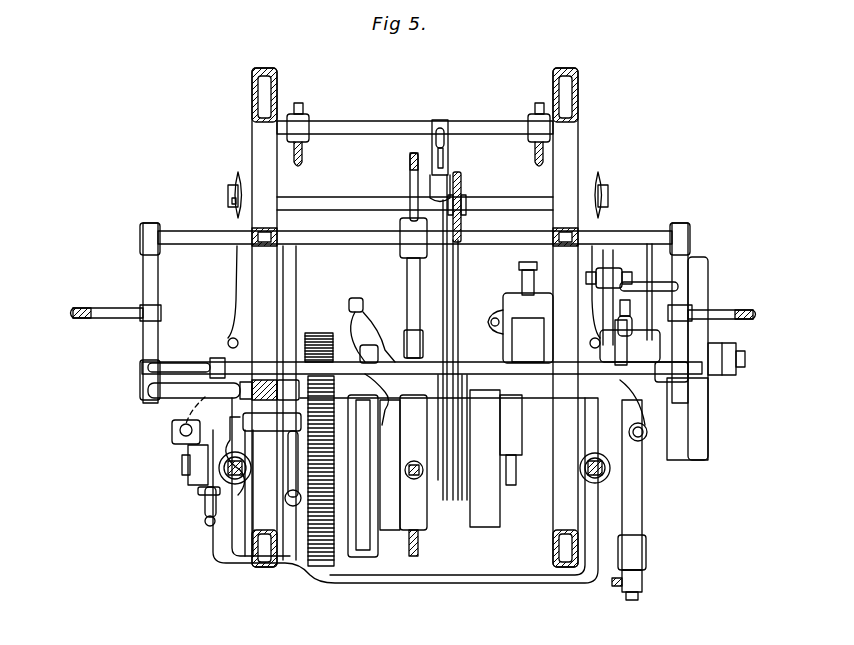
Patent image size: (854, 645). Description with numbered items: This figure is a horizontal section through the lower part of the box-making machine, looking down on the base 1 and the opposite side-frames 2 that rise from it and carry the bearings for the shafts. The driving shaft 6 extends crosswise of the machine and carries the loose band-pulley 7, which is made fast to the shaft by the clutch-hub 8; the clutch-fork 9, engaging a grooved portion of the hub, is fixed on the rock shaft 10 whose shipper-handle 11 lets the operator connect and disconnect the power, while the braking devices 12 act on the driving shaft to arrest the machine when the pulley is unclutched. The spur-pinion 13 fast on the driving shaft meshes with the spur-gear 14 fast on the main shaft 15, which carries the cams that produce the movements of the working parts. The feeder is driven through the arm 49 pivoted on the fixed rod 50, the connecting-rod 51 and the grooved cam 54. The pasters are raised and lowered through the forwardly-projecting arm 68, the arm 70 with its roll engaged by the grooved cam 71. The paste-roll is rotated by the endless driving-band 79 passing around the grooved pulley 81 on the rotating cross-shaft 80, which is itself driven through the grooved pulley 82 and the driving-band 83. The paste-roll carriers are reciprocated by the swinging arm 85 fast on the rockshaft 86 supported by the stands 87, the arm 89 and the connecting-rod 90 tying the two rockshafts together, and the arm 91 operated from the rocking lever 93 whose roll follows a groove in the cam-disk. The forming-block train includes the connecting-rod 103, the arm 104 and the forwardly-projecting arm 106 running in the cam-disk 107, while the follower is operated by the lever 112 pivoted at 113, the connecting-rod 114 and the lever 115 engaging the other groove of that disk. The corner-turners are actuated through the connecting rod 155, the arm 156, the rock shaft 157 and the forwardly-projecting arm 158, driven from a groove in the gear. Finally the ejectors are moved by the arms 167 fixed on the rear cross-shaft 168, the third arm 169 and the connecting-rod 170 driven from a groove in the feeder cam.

The base 1 is at (470, 578).
The side-frame 2 is at (250, 125).
The driving shaft 6 is at (746, 360).
The band-pulley 7 is at (710, 452).
The clutch-hub 8 is at (640, 340).
The clutch-fork 9 is at (634, 318).
The rock shaft 10 is at (645, 506).
The shipper-handle 11 is at (612, 590).
The braking devices 12 is at (512, 290).
The spur-pinion 13 is at (318, 331).
The spur-gear 14 is at (320, 570).
The main shaft 15 is at (186, 470).
The arm 49 is at (408, 182).
The rod 50 is at (358, 236).
The connecting-rod 51 is at (404, 273).
The grooved cam 54 is at (412, 572).
The forwardly-projecting arm 68 is at (652, 405).
The forwardly-projecting arm 70 is at (468, 422).
The grooved cam 71 is at (472, 530).
The endless driving-band 79 is at (240, 185).
The rotating cross-shaft 80 is at (500, 200).
The grooved pulley 81 is at (228, 196).
The grooved pulley 82 is at (462, 175).
The driving-band 83 is at (460, 298).
The swinging arm 85 is at (80, 318).
The rockshaft 86 is at (142, 276).
The stand 87 is at (138, 234).
The arm 89 is at (180, 361).
The connecting-rod 90 is at (285, 360).
The arm 91 is at (647, 280).
The rocking lever 93 is at (616, 328).
The connecting-rod 103 is at (182, 436).
The arm 104 is at (170, 380).
The forwardly-projecting arm 106 is at (386, 440).
The cam-disk 107 is at (360, 558).
The lever 112 is at (407, 458).
The pivot 113 is at (382, 412).
The connecting-rod 114 is at (372, 322).
The lever 115 is at (352, 335).
The connecting rod 155 is at (205, 520).
The arm 156 is at (225, 455).
The rock shaft 157 is at (240, 418).
The forwardly-projecting arm 158 is at (286, 468).
The arm 167 is at (304, 157).
The cross-shaft 168 is at (372, 120).
The third arm 169 is at (430, 143).
The connecting-rod 170 is at (450, 262).